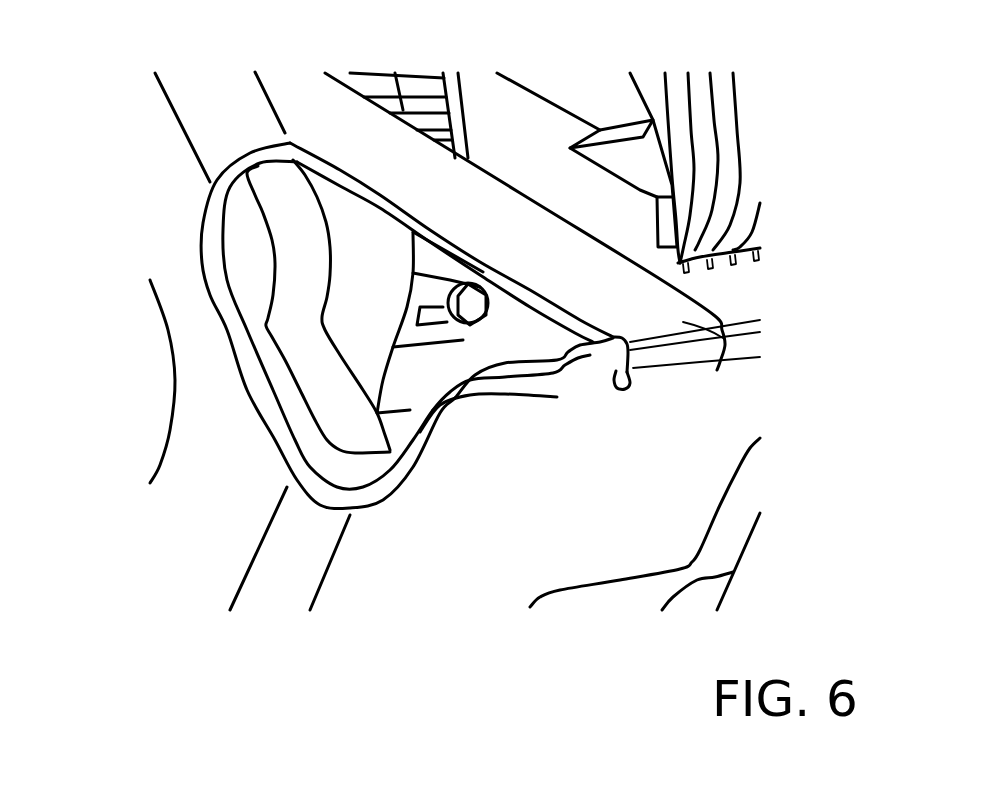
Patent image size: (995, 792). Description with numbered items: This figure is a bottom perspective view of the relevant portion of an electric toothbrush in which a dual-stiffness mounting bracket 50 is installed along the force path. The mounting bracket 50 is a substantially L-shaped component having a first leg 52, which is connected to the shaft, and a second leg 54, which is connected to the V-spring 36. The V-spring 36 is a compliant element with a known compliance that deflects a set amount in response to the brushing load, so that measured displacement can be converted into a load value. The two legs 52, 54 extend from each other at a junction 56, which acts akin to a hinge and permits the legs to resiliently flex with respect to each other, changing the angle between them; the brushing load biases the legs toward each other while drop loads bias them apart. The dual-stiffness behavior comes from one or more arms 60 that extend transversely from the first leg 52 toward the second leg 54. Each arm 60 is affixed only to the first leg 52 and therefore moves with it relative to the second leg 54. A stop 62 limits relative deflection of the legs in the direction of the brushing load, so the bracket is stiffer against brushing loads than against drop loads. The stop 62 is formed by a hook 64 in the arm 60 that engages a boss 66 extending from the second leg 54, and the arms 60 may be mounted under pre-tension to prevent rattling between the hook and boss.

The dual-stiffness mounting bracket 50 is at (119, 47).
The first leg 52 is at (175, 228).
The second leg 54 is at (642, 510).
The junction 56 is at (287, 558).
The V-spring 36 is at (745, 295).
The arm 60 is at (747, 330).
The stop 62 is at (622, 410).
The hook 64 is at (643, 377).
The boss 66 is at (583, 355).